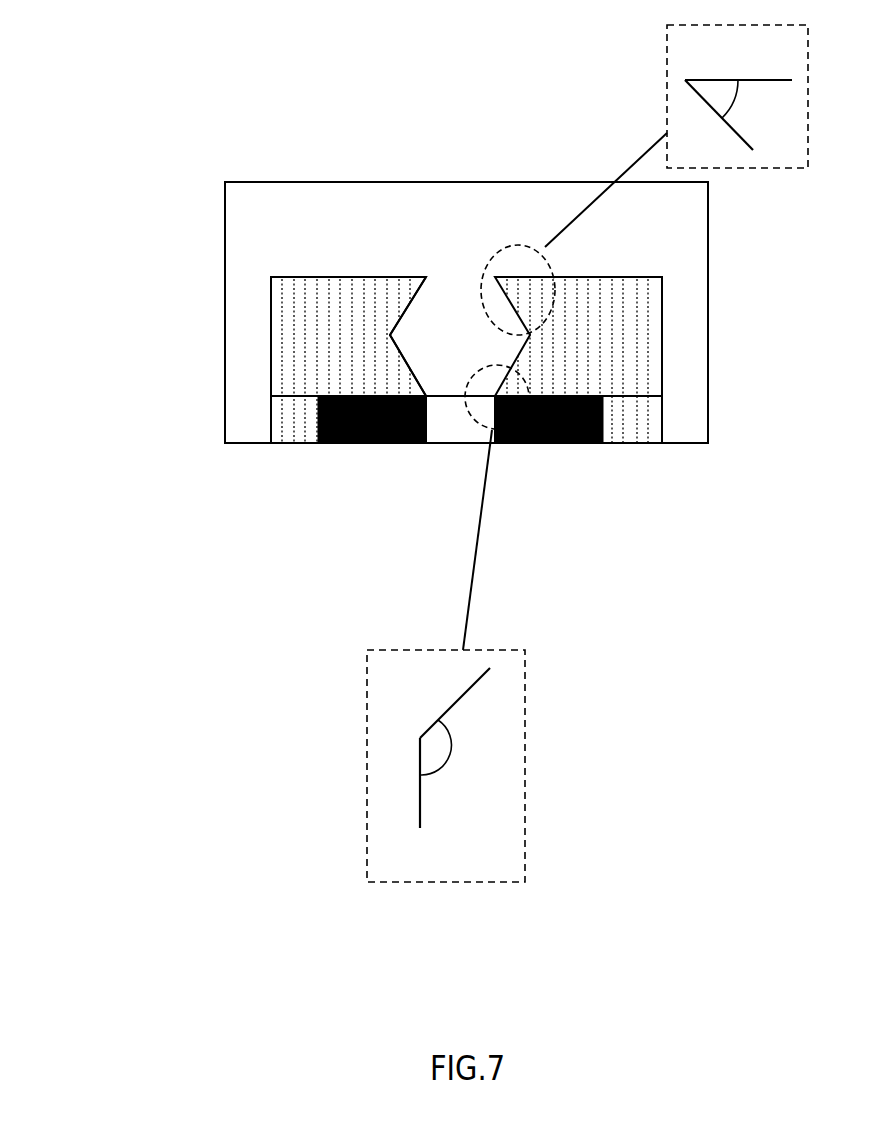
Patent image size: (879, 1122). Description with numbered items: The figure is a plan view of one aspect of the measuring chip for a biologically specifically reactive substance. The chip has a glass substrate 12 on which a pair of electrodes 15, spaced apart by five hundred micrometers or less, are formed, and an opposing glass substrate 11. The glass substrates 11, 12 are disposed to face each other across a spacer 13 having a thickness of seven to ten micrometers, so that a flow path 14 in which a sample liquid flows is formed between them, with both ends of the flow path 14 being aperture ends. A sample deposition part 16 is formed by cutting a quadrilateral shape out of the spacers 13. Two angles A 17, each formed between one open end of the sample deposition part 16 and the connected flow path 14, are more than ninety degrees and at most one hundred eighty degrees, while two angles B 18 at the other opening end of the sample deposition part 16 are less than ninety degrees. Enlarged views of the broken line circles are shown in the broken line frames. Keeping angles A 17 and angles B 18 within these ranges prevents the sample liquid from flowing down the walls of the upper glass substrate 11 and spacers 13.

The glass substrate 11 is at (627, 430).
The glass substrate 12 is at (272, 242).
The spacer 13 is at (297, 347).
The flow path 14 is at (463, 417).
The electrodes 15 is at (360, 443).
The sample deposition part 16 is at (460, 337).
The angle A 17 is at (513, 380).
The angle B 18 is at (508, 286).